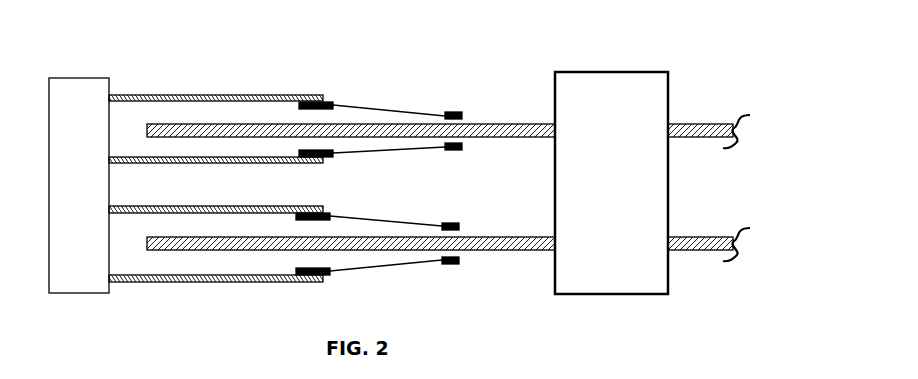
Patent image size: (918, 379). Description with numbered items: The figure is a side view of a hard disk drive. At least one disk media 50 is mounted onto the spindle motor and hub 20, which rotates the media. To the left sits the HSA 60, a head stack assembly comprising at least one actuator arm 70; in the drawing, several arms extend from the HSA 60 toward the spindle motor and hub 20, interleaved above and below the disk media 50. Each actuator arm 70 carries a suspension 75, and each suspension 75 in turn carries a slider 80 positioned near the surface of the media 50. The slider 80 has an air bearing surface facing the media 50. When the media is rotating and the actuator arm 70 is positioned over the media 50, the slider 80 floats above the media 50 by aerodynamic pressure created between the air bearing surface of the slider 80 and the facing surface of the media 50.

The spindle motor and hub 20 is at (613, 72).
The disk media 50 is at (492, 124).
The HSA 60 is at (77, 78).
The actuator arm 70 is at (215, 95).
The suspension 75 is at (357, 103).
The slider 80 is at (453, 112).